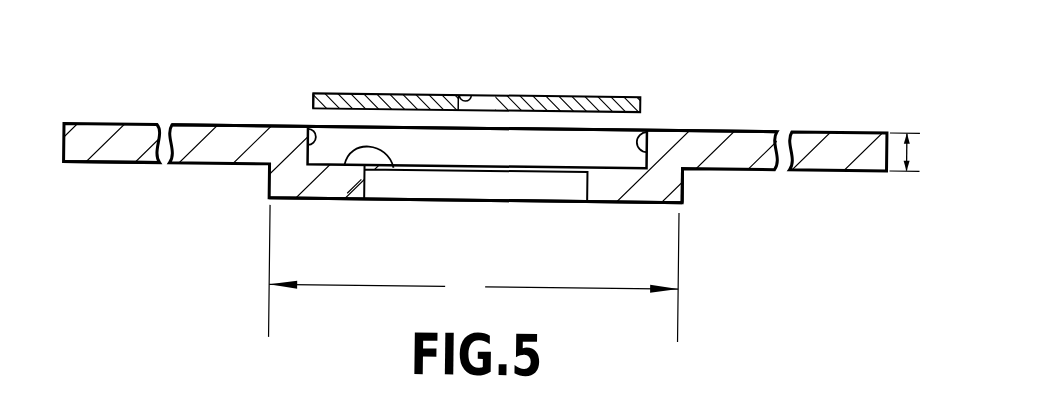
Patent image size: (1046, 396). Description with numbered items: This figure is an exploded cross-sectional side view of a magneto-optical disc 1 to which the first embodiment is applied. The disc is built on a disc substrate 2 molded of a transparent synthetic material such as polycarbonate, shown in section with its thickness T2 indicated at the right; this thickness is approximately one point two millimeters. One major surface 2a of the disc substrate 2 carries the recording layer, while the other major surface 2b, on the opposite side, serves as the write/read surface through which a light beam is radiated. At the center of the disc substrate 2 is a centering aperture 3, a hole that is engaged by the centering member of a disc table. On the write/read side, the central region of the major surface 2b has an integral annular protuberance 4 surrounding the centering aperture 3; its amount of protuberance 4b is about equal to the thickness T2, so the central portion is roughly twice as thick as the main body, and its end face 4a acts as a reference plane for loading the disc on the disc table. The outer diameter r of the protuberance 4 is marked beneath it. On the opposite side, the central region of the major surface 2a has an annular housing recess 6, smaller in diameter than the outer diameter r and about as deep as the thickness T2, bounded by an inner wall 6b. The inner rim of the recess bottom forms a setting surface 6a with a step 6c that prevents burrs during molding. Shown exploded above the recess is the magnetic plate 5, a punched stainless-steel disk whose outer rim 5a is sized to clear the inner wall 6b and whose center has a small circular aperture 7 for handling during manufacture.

The magneto-optical disc 1 is at (720, 100).
The disc substrate 2 is at (837, 144).
The major surface 2a is at (113, 124).
The other major surface 2b is at (118, 162).
The centering aperture 3 is at (575, 187).
The annular protuberance 4 is at (268, 186).
The end face of the protuberance 4a is at (656, 196).
The amount of protuberance 4b is at (684, 178).
The magnetic plate 5 is at (563, 97).
The outer rim of the magnetic plate 5a is at (313, 97).
The annular housing recess 6 is at (638, 121).
The setting surface 6a is at (394, 164).
The inner wall of the recess 6b is at (308, 124).
The step 6c is at (366, 168).
The circular aperture 7 is at (466, 90).
The thickness of the disc substrate T2 is at (919, 155).
The outer diameter of the protuberance r is at (478, 294).